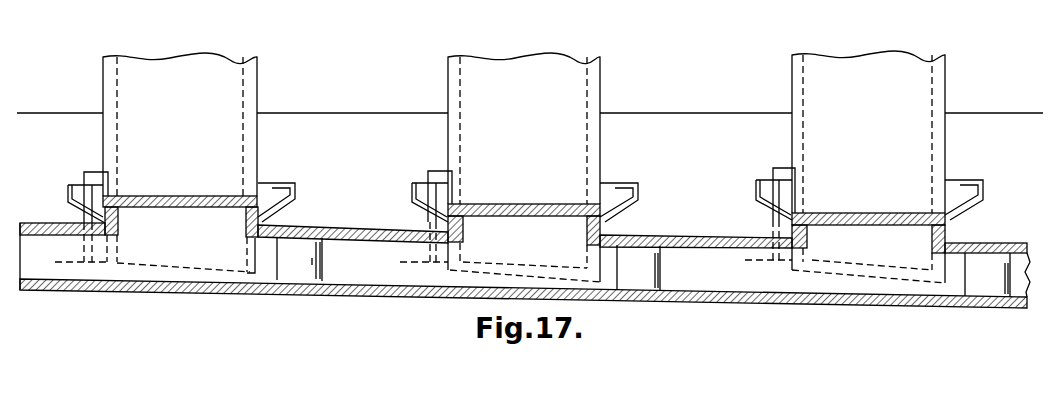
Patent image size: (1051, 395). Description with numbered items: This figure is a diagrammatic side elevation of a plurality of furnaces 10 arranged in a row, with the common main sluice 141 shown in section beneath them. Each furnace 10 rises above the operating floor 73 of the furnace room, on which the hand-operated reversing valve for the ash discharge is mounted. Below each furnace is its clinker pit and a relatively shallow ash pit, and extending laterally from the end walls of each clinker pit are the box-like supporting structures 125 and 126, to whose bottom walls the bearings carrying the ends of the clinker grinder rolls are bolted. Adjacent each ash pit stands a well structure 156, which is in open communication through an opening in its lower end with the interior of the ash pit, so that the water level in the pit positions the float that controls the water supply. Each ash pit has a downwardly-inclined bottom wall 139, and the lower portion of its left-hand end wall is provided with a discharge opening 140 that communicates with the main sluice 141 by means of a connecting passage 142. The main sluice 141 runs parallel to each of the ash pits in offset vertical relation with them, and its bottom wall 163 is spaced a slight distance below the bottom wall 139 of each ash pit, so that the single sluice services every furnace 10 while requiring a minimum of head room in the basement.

The operating floor 73 is at (80, 113).
The furnace 10 is at (103, 143).
The well structure 156 is at (97, 173).
The box-like supporting structure 125 is at (68, 188).
The box-like supporting structure 126 is at (294, 187).
The connecting passage 142 is at (296, 242).
The main sluice 141 is at (360, 242).
The bottom wall 139 is at (176, 263).
The discharge opening 140 is at (249, 266).
The bottom wall 163 is at (330, 283).